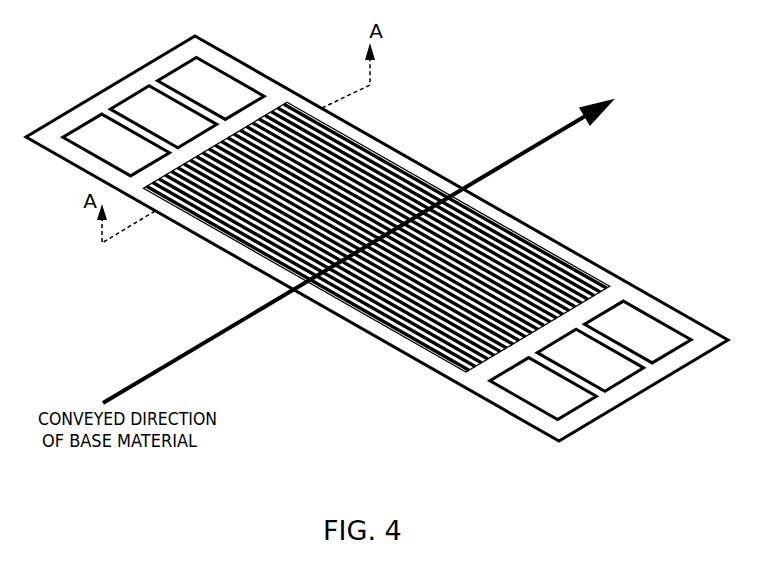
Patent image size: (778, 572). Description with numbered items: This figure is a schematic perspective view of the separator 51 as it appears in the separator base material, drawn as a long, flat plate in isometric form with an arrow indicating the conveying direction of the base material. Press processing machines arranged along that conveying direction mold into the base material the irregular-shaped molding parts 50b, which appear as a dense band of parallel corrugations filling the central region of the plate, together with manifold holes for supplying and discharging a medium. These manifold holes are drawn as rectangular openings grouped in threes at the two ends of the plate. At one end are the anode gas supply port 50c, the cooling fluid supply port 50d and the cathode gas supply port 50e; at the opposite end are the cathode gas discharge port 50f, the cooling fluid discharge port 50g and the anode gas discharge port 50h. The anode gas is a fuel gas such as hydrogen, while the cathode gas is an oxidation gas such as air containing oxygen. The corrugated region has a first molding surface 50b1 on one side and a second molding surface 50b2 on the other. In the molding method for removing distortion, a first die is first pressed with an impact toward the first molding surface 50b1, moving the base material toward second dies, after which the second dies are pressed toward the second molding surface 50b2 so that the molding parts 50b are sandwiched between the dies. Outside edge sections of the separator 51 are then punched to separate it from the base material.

The separator 51 is at (29, 26).
The irregular-shaped molding parts 50b is at (505, 213).
The first molding surface 50b1 is at (377, 320).
The second molding surface 50b2 is at (407, 343).
The anode gas supply port 50c is at (580, 412).
The cooling fluid supply port 50d is at (627, 382).
The cathode gas supply port 50e is at (673, 353).
The cathode gas discharge port 50f is at (90, 122).
The cooling fluid discharge port 50g is at (133, 92).
The anode gas discharge port 50h is at (182, 62).